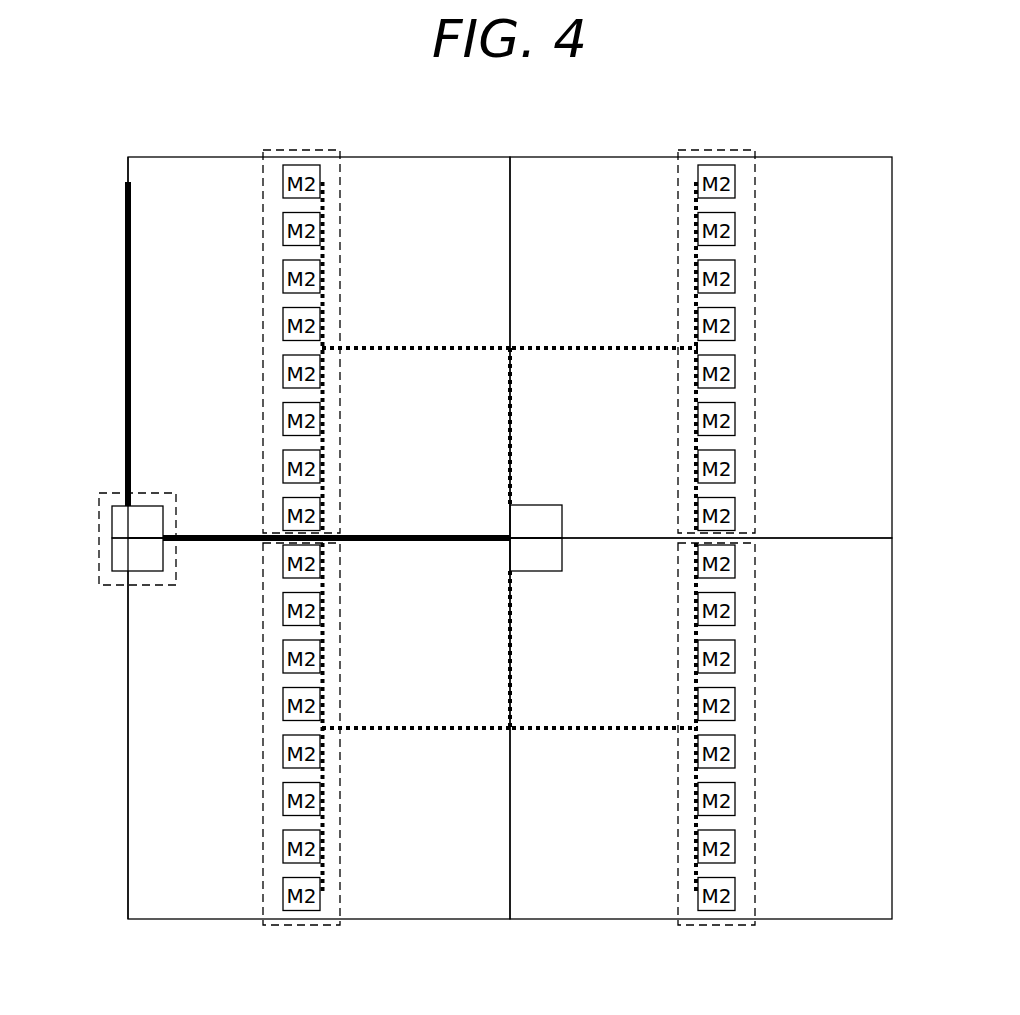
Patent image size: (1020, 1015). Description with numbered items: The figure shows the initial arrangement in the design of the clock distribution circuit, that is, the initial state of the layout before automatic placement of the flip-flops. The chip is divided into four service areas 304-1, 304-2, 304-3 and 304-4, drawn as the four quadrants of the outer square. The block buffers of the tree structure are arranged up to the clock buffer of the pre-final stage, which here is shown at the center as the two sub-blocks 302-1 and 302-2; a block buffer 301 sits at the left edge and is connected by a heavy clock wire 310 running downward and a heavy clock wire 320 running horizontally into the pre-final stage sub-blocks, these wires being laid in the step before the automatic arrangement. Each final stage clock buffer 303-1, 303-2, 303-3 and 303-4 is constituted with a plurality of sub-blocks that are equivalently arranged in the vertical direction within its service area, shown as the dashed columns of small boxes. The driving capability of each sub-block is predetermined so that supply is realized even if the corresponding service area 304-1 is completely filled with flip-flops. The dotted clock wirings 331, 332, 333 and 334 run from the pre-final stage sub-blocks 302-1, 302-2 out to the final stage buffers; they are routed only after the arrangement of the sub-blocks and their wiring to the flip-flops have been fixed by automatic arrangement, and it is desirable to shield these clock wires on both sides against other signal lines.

The L1 logic block pair 301 is at (97, 535).
The sub-block of the pre-final stage clock buffer 302-1 is at (543, 505).
The sub-block of the pre-final stage clock buffer 302-2 is at (540, 572).
The final stage clock buffer 303-1 is at (302, 148).
The final stage clock buffer 303-2 is at (720, 148).
The final stage clock buffer 303-3 is at (302, 925).
The final stage clock buffer 303-4 is at (720, 925).
The service area 304-1 is at (197, 155).
The service area 304-2 is at (825, 157).
The service area 304-3 is at (197, 920).
The service area 304-4 is at (836, 920).
The signal line 310 is at (125, 320).
The signal line 320 is at (420, 535).
The clock wiring 331 is at (413, 345).
The clock wiring 332 is at (588, 345).
The clock wiring 333 is at (415, 730).
The clock wiring 334 is at (596, 730).